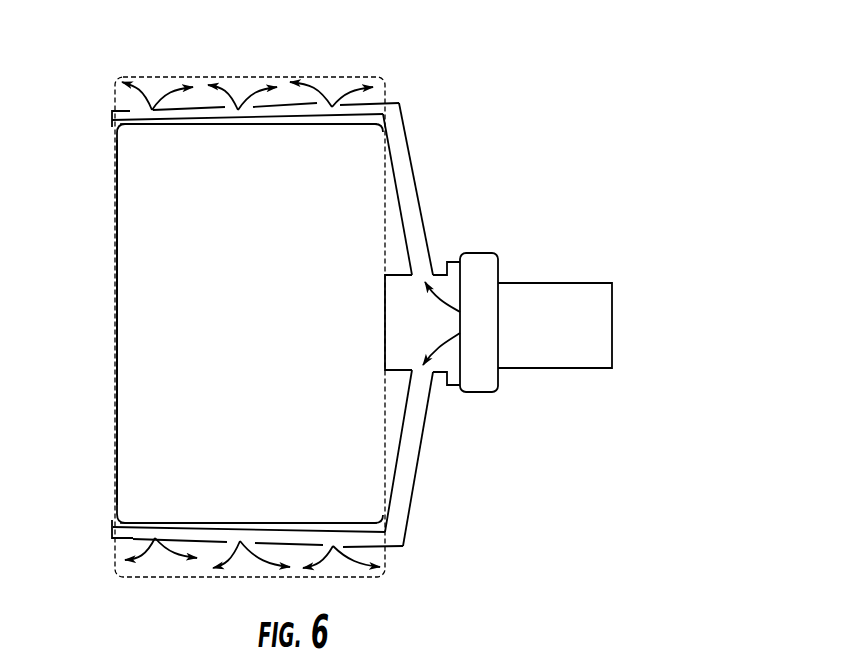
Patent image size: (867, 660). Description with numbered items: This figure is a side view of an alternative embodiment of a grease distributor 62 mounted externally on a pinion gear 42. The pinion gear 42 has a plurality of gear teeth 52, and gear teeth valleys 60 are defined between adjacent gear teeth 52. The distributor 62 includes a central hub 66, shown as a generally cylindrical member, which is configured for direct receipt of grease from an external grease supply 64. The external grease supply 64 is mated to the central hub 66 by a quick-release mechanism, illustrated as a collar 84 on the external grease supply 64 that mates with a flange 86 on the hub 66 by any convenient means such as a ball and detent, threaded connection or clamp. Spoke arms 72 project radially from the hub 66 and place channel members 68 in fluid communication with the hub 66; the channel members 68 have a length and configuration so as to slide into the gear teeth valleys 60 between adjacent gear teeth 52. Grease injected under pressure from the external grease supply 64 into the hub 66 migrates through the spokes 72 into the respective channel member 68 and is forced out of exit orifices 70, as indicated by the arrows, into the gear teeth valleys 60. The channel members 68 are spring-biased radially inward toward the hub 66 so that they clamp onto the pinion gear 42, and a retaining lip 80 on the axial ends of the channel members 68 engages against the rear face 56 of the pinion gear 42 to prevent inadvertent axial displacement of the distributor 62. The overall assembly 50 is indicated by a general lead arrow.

The pinion gear 42 is at (115, 232).
The nozzle assembly 50 is at (655, 90).
The gear teeth 52 is at (168, 78).
The rear face 56 is at (120, 345).
The gear teeth valleys 60 is at (242, 98).
The grease distributor 62 is at (432, 482).
The external grease supply 64 is at (573, 360).
The central hub 66 is at (392, 276).
The channel member 68 is at (244, 113).
The exit orifices 70 is at (328, 103).
The spoke arm 72 is at (421, 208).
The retaining lip 80 is at (108, 118).
The collar 84 is at (488, 276).
The flange 86 is at (452, 385).